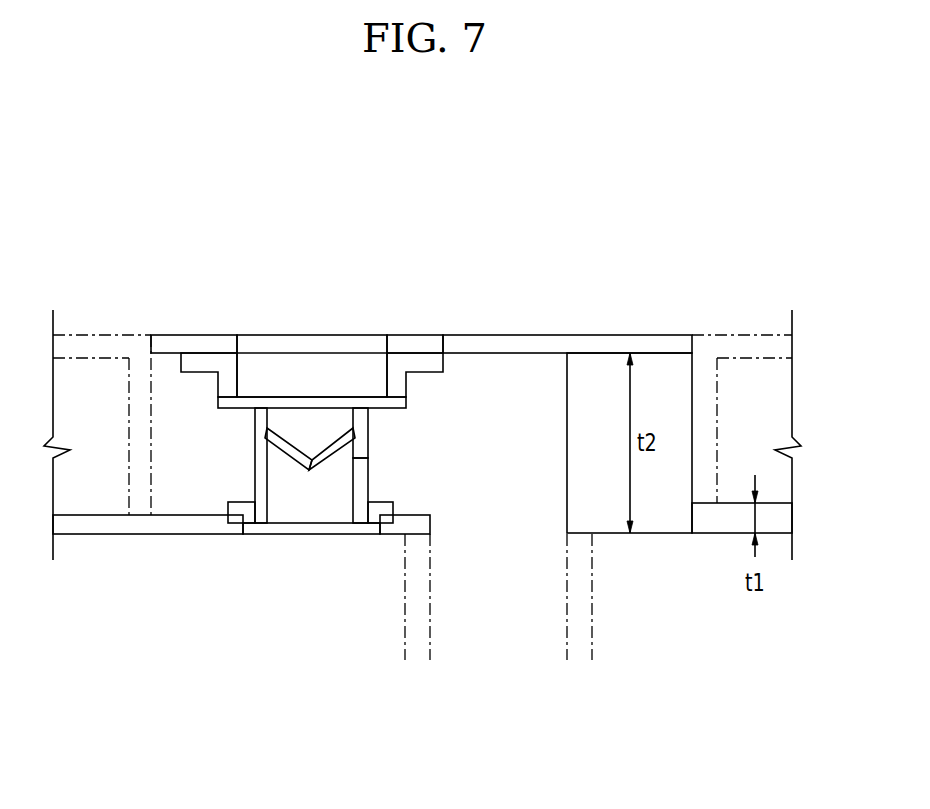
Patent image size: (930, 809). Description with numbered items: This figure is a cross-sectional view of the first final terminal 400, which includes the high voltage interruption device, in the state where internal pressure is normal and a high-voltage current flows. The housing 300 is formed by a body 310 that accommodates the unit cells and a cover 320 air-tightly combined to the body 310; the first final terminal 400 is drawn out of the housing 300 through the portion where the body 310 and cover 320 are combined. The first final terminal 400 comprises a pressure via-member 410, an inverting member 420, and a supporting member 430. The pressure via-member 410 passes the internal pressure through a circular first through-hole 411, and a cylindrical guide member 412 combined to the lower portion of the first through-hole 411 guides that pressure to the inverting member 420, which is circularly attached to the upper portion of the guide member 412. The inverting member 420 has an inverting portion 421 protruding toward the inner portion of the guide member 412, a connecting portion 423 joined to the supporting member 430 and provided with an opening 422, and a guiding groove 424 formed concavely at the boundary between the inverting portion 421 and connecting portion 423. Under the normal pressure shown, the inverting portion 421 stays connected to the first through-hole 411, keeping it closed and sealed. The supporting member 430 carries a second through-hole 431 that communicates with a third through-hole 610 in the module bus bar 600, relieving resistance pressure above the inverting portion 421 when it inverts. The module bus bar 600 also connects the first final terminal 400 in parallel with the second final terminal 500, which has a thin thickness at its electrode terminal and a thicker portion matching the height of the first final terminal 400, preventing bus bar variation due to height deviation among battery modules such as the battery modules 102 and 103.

The battery module 102 is at (414, 688).
The battery module 103 is at (599, 688).
The housing 300 is at (167, 735).
The body 310 is at (405, 632).
The cover 320 is at (87, 342).
The first final terminal 400 is at (512, 373).
The pressure via-member 410 is at (170, 520).
The first through-hole 411 is at (258, 535).
The guide member 412 is at (382, 472).
The inverting member 420 is at (382, 423).
The inverting portion 421 is at (283, 458).
The opening 422 is at (268, 427).
The connecting portion 423 is at (257, 417).
The guiding groove 424 is at (265, 437).
The supporting member 430 is at (418, 387).
The second through-hole 431 is at (347, 398).
The second final terminal 500 is at (658, 520).
The module bus bar 600 is at (530, 337).
The third through-hole 610 is at (373, 338).